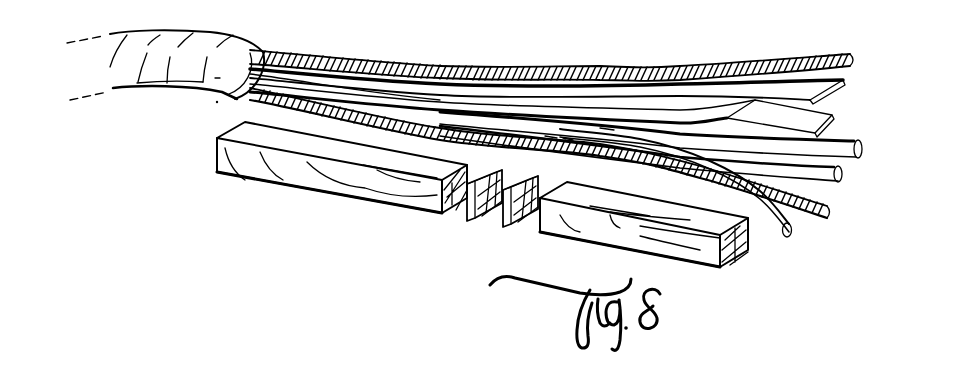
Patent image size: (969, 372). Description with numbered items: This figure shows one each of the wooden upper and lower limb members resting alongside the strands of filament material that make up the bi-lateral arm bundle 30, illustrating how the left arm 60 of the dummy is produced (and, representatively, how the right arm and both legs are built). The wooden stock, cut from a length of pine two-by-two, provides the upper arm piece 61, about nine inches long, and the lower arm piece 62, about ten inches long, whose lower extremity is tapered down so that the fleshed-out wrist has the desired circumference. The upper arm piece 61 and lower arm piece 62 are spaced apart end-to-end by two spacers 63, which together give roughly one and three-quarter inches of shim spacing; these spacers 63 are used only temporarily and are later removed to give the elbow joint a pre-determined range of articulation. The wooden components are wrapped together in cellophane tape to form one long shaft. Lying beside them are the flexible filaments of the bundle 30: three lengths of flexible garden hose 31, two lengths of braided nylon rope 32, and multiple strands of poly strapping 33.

The bi-lateral arm bundle 30 is at (490, 52).
The left arm 60 is at (557, 140).
The flexible garden hose 31 is at (857, 160).
The braided nylon rope 32 is at (727, 60).
The poly strapping 33 is at (770, 115).
The upper arm piece 61 is at (257, 178).
The lower arm piece 62 is at (712, 240).
The spacers 63 is at (520, 227).